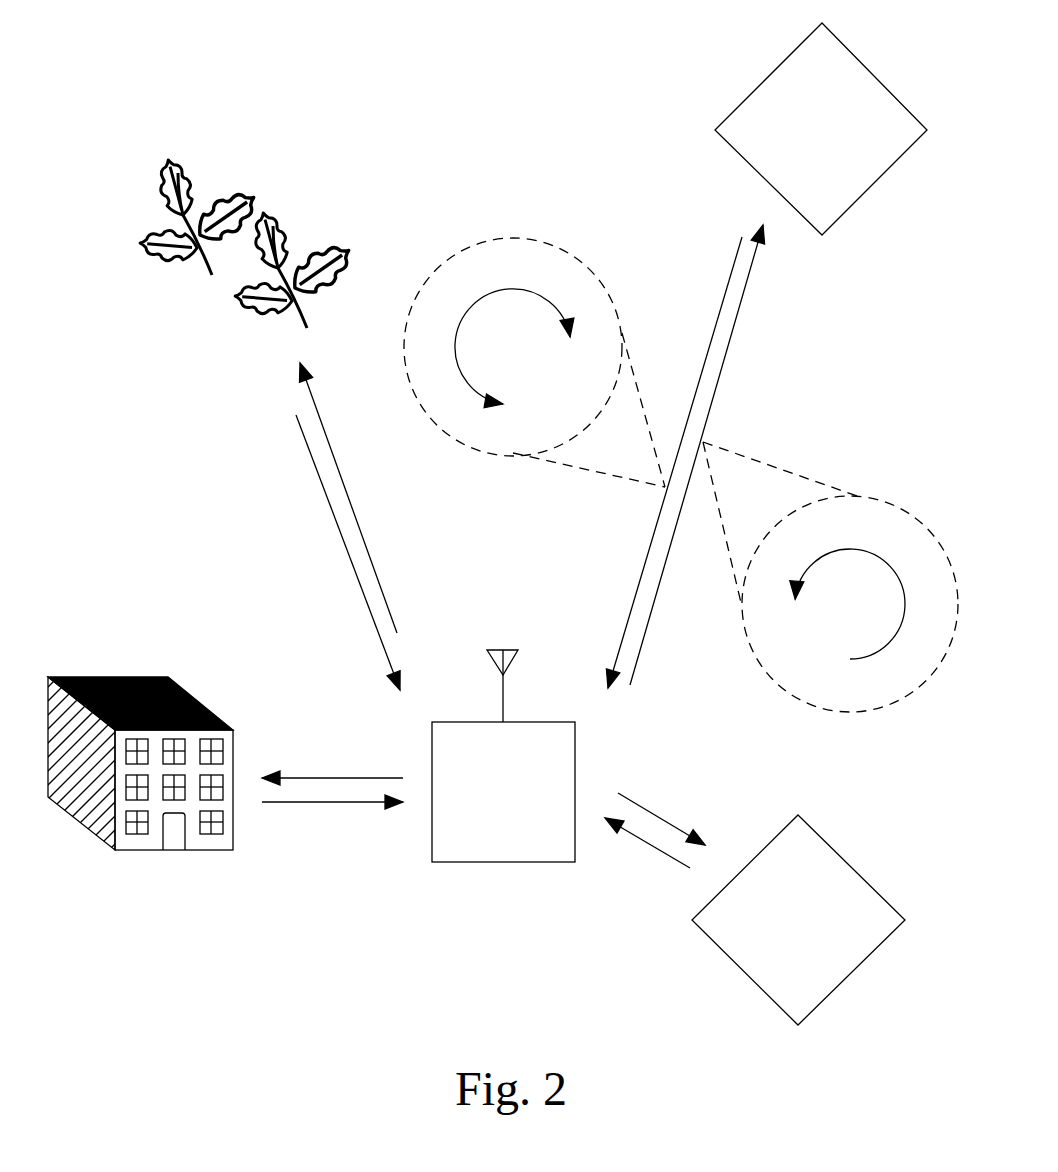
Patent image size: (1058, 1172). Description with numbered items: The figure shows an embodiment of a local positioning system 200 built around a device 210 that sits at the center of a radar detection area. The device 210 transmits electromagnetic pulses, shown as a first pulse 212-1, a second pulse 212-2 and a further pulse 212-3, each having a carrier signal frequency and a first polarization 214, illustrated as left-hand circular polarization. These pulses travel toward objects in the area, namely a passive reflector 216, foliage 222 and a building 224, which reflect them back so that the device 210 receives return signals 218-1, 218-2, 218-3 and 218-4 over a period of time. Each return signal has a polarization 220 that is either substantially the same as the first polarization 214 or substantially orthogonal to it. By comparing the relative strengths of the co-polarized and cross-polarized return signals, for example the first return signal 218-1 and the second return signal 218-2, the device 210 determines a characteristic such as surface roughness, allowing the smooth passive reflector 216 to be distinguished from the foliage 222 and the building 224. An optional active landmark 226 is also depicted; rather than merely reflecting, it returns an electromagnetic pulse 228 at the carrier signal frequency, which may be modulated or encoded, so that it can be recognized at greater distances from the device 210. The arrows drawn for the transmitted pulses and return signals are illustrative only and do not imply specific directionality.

The local positioning system 200 is at (508, 80).
The device 210 is at (503, 756).
The first pulse 212-1 is at (748, 297).
The second pulse 212-2 is at (377, 543).
The electromagnetic pulse 212-3 is at (322, 778).
The first polarization 214 is at (930, 537).
The passive reflector 216 is at (821, 129).
The first return signal 218-1 is at (732, 267).
The second return signal 218-2 is at (377, 590).
The return signal 218-3 is at (373, 802).
The return signal 218-4 is at (662, 818).
The polarization of return signal 220 is at (493, 238).
The foliage 222 is at (283, 220).
The building 224 is at (90, 677).
The active landmark 226 is at (798, 920).
The return electromagnetic pulse 228 is at (645, 847).